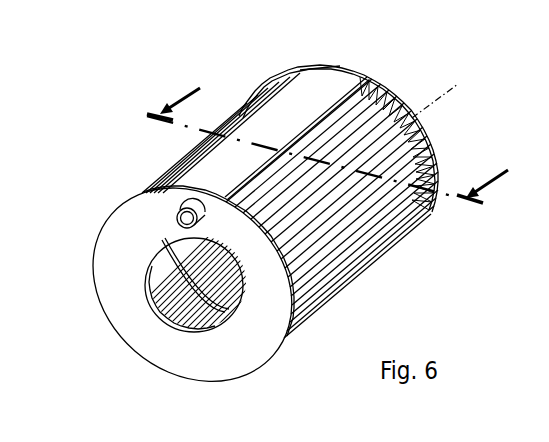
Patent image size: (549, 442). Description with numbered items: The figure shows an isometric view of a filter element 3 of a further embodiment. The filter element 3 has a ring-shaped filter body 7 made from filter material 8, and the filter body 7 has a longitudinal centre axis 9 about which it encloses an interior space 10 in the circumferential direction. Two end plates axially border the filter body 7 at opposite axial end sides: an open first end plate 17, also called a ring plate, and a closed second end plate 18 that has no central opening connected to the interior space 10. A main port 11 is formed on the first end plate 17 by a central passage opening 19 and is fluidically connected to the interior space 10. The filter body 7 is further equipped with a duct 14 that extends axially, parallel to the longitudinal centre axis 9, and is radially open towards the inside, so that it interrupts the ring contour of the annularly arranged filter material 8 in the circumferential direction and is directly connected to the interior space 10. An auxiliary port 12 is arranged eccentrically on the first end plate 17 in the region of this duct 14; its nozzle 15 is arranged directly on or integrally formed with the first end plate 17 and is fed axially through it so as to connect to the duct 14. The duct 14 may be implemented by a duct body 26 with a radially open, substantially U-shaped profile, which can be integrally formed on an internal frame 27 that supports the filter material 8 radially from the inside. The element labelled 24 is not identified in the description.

The filter element 3 is at (140, 93).
The filter body 7 is at (173, 167).
The filter material 8 is at (367, 257).
The longitudinal centre axis 9 is at (441, 97).
The interior space 10 is at (153, 309).
The main port 11 is at (148, 292).
The auxiliary port 12 is at (181, 218).
The duct 14 is at (307, 103).
The nozzle 15 is at (208, 211).
The first end plate 17 is at (265, 362).
The second end plate 18 is at (436, 156).
The central passage opening 19 is at (212, 325).
The connection 24 is at (548, 441).
The duct body 26 is at (292, 130).
The internal frame 27 is at (197, 322).